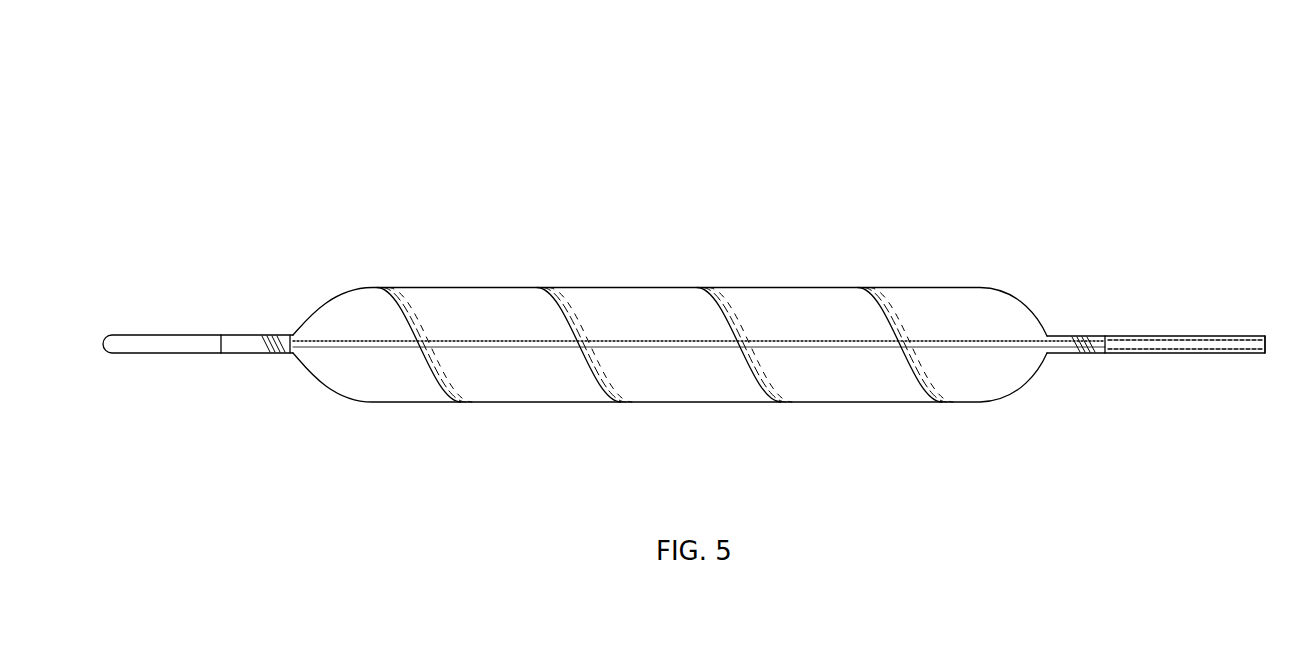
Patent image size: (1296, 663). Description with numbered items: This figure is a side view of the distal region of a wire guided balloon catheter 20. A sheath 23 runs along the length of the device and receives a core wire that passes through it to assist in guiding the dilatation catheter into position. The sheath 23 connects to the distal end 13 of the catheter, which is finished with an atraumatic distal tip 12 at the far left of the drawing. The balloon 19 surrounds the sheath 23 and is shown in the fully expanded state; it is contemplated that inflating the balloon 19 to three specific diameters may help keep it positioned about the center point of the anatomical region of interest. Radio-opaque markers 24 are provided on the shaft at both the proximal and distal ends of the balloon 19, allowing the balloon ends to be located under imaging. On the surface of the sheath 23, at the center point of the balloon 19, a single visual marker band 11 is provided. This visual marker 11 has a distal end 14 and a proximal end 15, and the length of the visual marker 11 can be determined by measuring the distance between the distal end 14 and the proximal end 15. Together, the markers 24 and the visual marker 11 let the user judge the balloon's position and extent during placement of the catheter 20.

The wire guided balloon catheter 20 is at (729, 82).
The visual marker band 11 is at (652, 345).
The atraumatic distal tip 12 is at (120, 354).
The distal end 13 is at (208, 343).
The radio-opaque markers 24 is at (221, 342).
The balloon 19 is at (918, 287).
The sheath 23 is at (458, 343).
The distal end of visual marker 14 is at (610, 340).
The proximal end of visual marker 15 is at (677, 340).